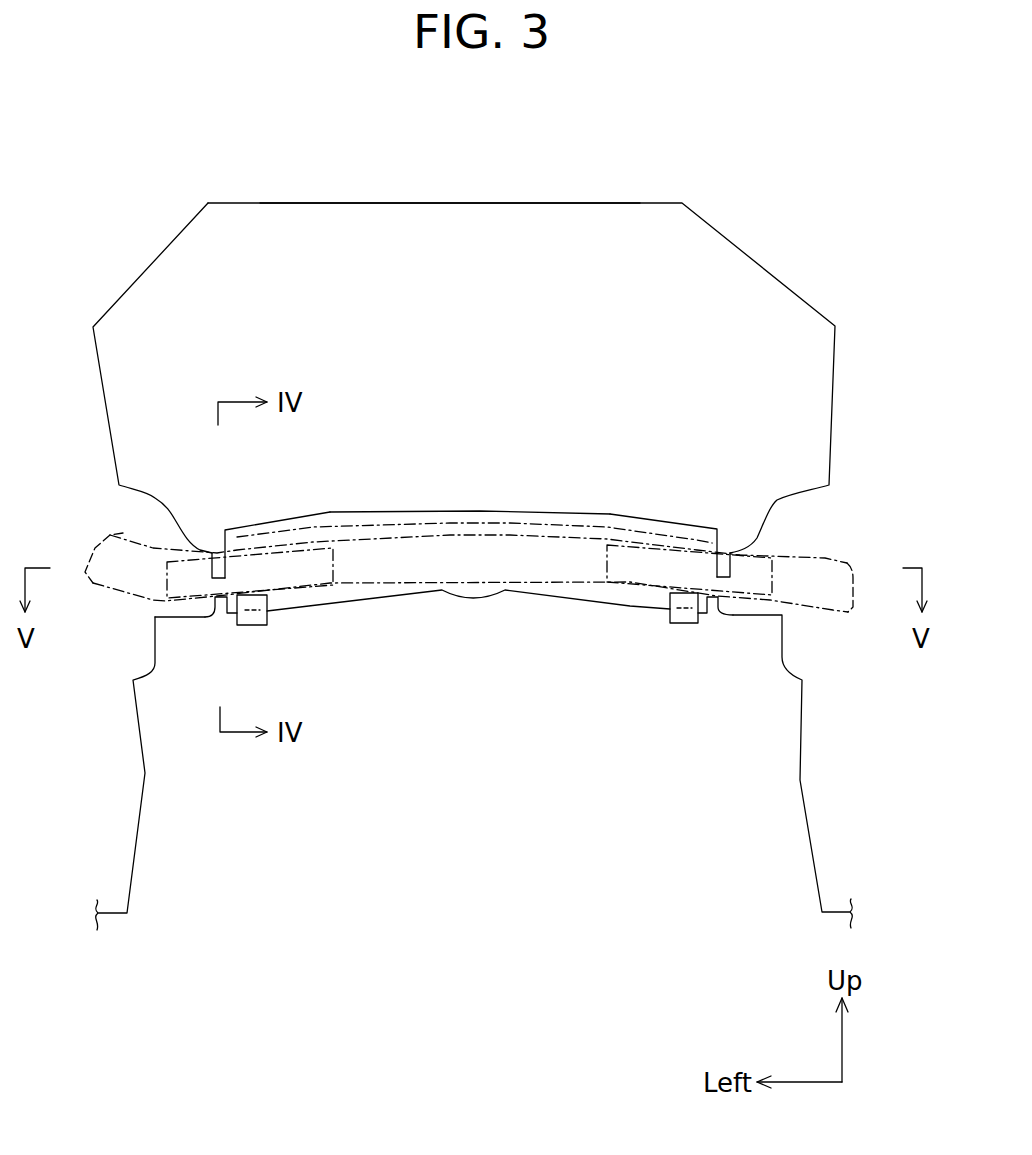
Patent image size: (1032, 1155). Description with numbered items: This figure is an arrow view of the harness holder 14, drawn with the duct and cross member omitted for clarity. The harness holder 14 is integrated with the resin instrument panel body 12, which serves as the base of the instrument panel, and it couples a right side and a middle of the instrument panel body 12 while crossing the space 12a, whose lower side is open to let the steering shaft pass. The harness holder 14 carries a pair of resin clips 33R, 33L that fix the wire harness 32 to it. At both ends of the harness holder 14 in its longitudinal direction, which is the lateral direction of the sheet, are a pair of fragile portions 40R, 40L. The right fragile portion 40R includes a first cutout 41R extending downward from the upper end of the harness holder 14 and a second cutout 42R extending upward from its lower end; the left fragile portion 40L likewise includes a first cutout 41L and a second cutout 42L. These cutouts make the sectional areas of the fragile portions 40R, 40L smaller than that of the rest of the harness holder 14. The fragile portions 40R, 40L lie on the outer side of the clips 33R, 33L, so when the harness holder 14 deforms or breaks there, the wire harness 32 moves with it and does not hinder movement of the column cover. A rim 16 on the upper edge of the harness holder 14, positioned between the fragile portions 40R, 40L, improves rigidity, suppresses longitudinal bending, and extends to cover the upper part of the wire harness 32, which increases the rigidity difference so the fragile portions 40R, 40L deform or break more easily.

The instrument panel body 12 is at (779, 177).
The space 12a is at (455, 250).
The harness holder 14 is at (471, 511).
The rim 16 is at (457, 522).
The wire harness 32 is at (511, 534).
The left clip 33L is at (252, 626).
The right clip 33R is at (685, 624).
The left fragile portion 40L is at (229, 519).
The right fragile portion 40R is at (709, 518).
The first cutout 41L is at (216, 552).
The first cutout 41R is at (723, 556).
The second cutout 42L is at (222, 602).
The second cutout 42R is at (716, 603).